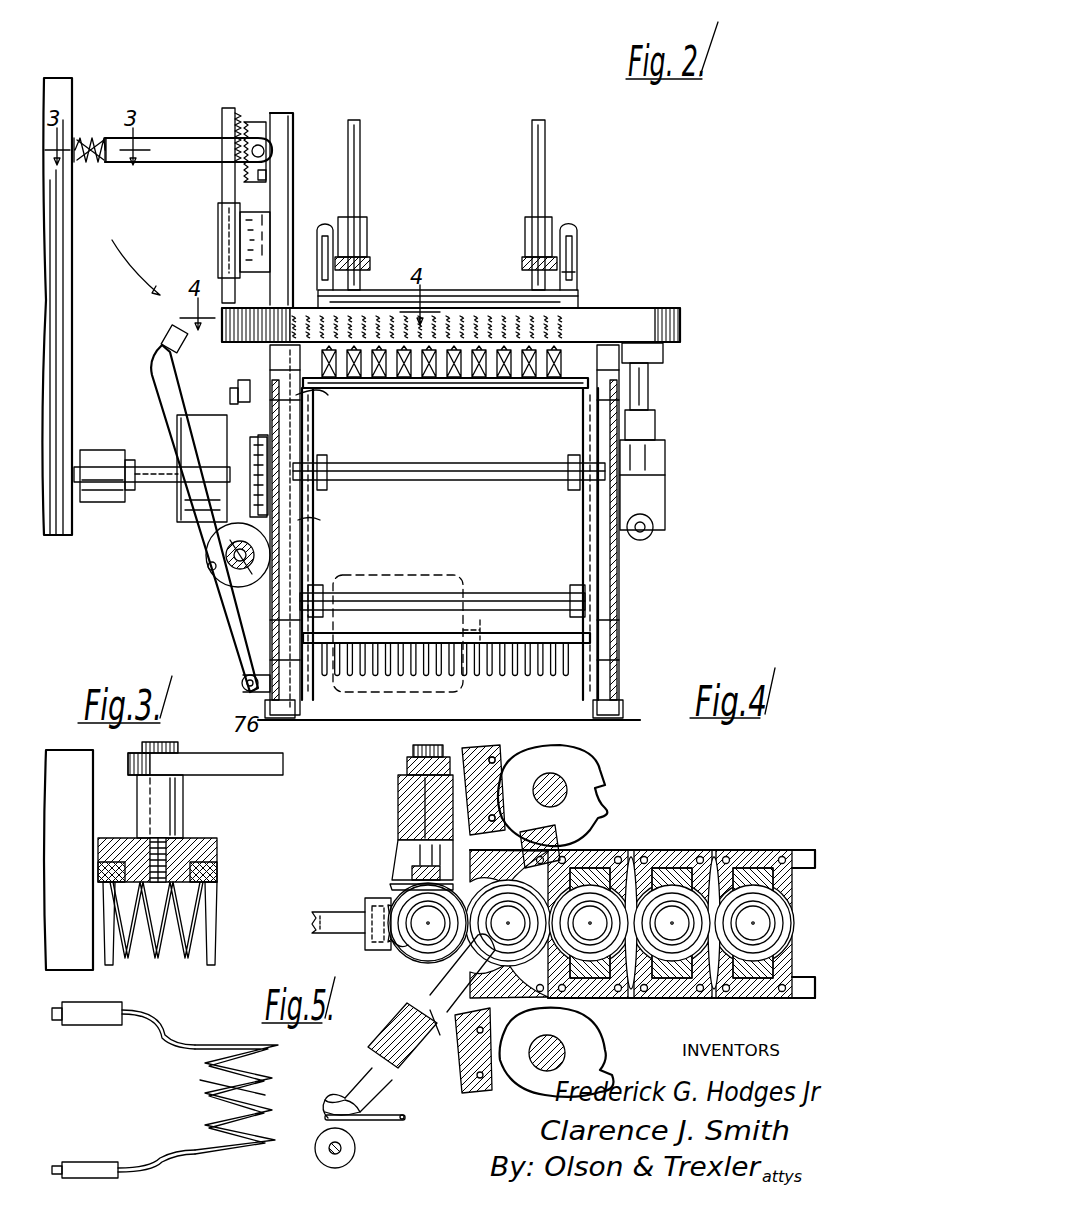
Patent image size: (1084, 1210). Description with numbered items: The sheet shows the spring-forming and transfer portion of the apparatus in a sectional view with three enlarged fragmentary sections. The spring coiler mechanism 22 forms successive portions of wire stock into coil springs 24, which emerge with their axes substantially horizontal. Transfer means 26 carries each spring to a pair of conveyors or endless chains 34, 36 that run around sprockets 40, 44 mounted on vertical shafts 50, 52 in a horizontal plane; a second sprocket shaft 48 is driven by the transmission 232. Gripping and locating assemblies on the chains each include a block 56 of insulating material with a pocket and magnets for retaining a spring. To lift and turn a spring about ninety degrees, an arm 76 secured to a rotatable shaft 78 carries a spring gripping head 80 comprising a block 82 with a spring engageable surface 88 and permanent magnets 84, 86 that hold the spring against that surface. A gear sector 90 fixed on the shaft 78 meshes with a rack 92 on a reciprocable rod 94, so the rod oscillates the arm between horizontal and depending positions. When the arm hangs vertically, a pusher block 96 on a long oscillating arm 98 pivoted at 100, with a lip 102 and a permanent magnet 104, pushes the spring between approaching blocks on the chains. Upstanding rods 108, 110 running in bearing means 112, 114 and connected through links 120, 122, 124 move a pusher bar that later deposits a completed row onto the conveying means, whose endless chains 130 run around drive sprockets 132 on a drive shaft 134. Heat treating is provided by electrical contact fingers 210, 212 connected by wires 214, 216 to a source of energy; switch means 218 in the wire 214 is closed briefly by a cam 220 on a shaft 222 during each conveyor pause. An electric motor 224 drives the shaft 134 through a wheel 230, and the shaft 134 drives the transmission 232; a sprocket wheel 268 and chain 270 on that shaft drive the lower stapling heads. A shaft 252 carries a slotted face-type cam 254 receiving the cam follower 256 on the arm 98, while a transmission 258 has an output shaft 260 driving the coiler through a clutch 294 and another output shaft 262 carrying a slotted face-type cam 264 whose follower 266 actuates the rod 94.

In FIG. 2, the spring coiler mechanism 22 is at (68, 69).
In FIG. 2, the coil springs 24 is at (95, 150).
In FIG. 3, the coil springs 24 is at (216, 950).
In FIG. 4, the coil springs 24 is at (430, 972).
In FIG. 5, the coil springs 24 is at (263, 1082).
In FIG. 2, the transfer means 26 is at (429, 273).
In FIG. 4, the conveyor chain 34 is at (795, 850).
In FIG. 4, the conveyor chain 36 is at (805, 992).
In FIG. 4, the sprocket 40 is at (594, 803).
In FIG. 4, the sprocket 44 is at (640, 1000).
In FIG. 2, the shaft 48 is at (648, 398).
In FIG. 4, the vertical shaft 50 is at (565, 780).
In FIG. 4, the vertical shaft 52 is at (545, 1045).
In FIG. 4, the block 56 is at (715, 868).
In FIG. 2, the arm 76 is at (170, 138).
In FIG. 3, the arm 76 is at (232, 752).
In FIG. 4, the arm 76 is at (407, 760).
In FIG. 2, the shaft 78 is at (266, 146).
In FIG. 2, the spring gripping head 80 is at (86, 134).
In FIG. 3, the spring gripping head 80 is at (118, 828).
In FIG. 4, the spring gripping head 80 is at (398, 850).
In FIG. 3, the block 82 is at (215, 855).
In FIG. 3, the permanent magnet 84 is at (100, 872).
In FIG. 3, the permanent magnet 86 is at (217, 874).
In FIG. 3, the spring engageable surface 88 is at (195, 898).
In FIG. 4, the spring engageable surface 88 is at (392, 884).
In FIG. 2, the gear sector 90 is at (255, 120).
In FIG. 2, the rack 92 is at (234, 108).
In FIG. 2, the reciprocable rod 94 is at (230, 188).
In FIG. 2, the pusher block 96 is at (155, 343).
In FIG. 4, the pusher block 96 is at (365, 945).
In FIG. 2, the oscillating arm 98 is at (178, 430).
In FIG. 2, the pivot 100 is at (243, 680).
In FIG. 2, the lip 102 is at (170, 330).
In FIG. 4, the lip 102 is at (400, 948).
In FIG. 4, the permanent magnet 104 is at (360, 910).
In FIG. 2, the upstanding rod 108 is at (360, 128).
In FIG. 2, the upstanding rod 110 is at (545, 130).
In FIG. 2, the bearing means 112 is at (368, 218).
In FIG. 2, the bearing means 114 is at (552, 222).
In FIG. 2, the link 120 is at (578, 290).
In FIG. 2, the link 122 is at (576, 258).
In FIG. 2, the link 124 is at (578, 228).
In FIG. 2, the endless chains 130 is at (318, 392).
In FIG. 2, the drive sprockets 132 is at (585, 530).
In FIG. 2, the drive shaft 134 is at (440, 462).
In FIG. 4, the electrical contact finger 210 is at (437, 1040).
In FIG. 5, the electrical contact finger 210 is at (183, 1035).
In FIG. 5, the electrical contact finger 212 is at (170, 1160).
In FIG. 4, the wire 214 is at (365, 1098).
In FIG. 5, the wire 214 is at (60, 1025).
In FIG. 4, the wire 216 is at (350, 1082).
In FIG. 5, the wire 216 is at (60, 1162).
In FIG. 4, the switch means 218 is at (385, 1110).
In FIG. 4, the cam 220 is at (355, 1144).
In FIG. 4, the shaft 222 is at (343, 1152).
In FIG. 2, the electric motor 224 is at (465, 585).
In FIG. 2, the wheel 230 is at (300, 418).
In FIG. 2, the transmission 232 is at (665, 483).
In FIG. 2, the shaft 252 is at (225, 565).
In FIG. 2, the slotted face-type cam 254 is at (206, 550).
In FIG. 2, the cam follower 256 is at (207, 568).
In FIG. 2, the transmission 258 is at (186, 510).
In FIG. 2, the output shaft 260 is at (150, 480).
In FIG. 2, the output shaft 262 is at (266, 445).
In FIG. 2, the slotted face-type cam 264 is at (238, 394).
In FIG. 2, the cam follower 266 is at (230, 400).
In FIG. 2, the sprocket wheel 268 is at (318, 508).
In FIG. 2, the chain 270 is at (268, 520).
In FIG. 2, the clutch 294 is at (115, 470).